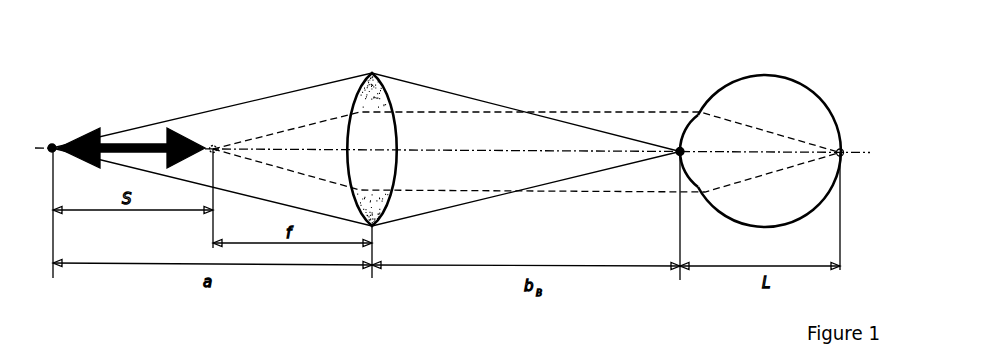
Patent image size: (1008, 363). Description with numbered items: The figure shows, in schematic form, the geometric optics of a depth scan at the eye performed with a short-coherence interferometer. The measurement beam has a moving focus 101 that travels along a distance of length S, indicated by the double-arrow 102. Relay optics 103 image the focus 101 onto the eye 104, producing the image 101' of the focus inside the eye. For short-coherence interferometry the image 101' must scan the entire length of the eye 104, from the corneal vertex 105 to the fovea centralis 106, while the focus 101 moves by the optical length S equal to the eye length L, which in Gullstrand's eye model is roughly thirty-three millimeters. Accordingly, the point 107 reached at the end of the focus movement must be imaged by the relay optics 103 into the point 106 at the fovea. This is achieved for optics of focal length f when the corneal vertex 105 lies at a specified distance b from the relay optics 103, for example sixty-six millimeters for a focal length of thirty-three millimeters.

The moving focus of the measurement beam 101 is at (41, 95).
The double-arrow 102 is at (113, 147).
The relay optics 103 is at (388, 97).
The eye 104 is at (777, 77).
The corneal vertex 105 is at (678, 150).
The fovea centralis 106 is at (841, 149).
The point at end of focus movement 107 is at (215, 146).
The image of the focus 101' is at (677, 97).